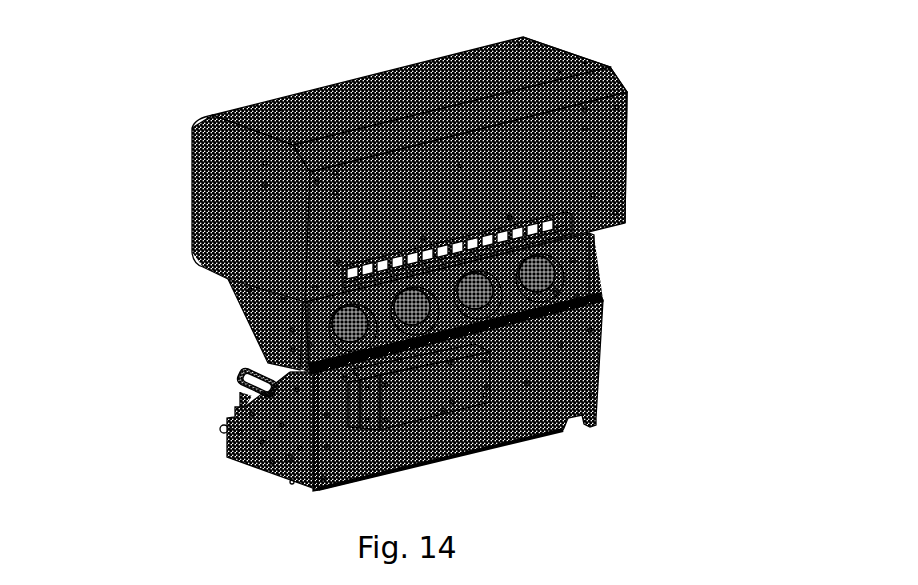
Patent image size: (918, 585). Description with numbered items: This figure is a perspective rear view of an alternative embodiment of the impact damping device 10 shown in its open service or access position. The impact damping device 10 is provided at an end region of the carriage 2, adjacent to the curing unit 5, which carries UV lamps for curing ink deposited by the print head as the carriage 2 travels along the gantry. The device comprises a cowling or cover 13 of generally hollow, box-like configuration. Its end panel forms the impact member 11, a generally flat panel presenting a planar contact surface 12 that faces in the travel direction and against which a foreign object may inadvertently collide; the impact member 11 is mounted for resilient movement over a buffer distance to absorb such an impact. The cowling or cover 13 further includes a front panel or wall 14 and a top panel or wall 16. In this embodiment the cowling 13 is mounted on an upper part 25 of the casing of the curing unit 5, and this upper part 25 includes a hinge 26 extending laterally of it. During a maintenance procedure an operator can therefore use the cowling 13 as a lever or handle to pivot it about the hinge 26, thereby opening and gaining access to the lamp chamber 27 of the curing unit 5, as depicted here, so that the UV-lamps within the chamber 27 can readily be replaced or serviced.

The carriage 2 is at (664, 410).
The curing unit 5 is at (268, 452).
The impact damping device 10 is at (148, 152).
The impact member 11 is at (294, 110).
The contact surface 12 is at (378, 92).
The cowling or cover 13 is at (638, 110).
The front panel or wall 14 is at (215, 232).
The top panel or wall 16 is at (623, 167).
The upper part of casing 25 is at (580, 253).
The hinge 26 is at (600, 300).
The lamp chamber 27 is at (232, 371).